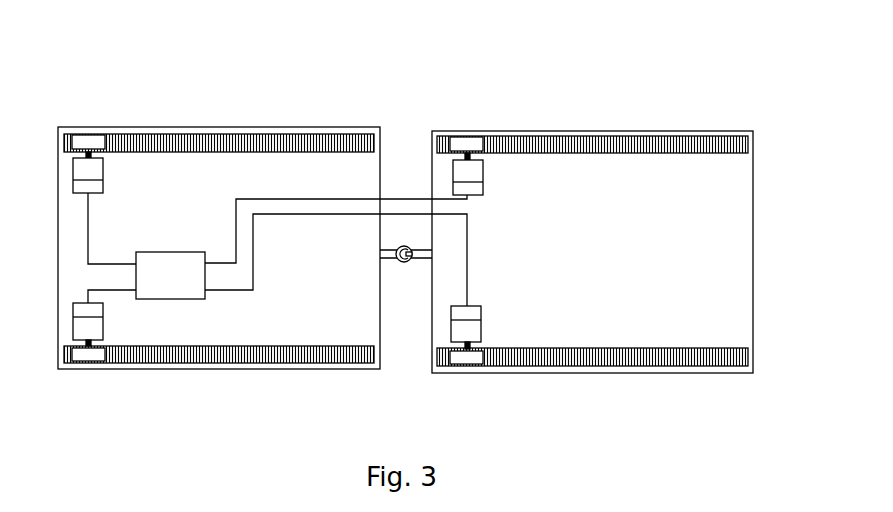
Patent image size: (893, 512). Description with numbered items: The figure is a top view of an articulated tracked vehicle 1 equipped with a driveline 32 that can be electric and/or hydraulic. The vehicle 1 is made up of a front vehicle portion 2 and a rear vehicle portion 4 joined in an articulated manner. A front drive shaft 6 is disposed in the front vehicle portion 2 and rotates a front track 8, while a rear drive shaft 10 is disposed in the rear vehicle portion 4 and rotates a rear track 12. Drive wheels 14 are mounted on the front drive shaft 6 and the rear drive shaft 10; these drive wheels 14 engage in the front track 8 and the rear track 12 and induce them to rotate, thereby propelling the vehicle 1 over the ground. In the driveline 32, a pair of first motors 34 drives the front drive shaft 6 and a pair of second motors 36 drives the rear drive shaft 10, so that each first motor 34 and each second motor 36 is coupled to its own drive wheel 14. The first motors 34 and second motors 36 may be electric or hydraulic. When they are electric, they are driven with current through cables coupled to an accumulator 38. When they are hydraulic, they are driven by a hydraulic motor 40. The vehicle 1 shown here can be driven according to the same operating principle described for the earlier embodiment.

The articulated tracked vehicle 1 is at (455, 78).
The front vehicle portion 2 is at (256, 124).
The rear vehicle portion 4 is at (632, 129).
The front drive shaft 6 is at (118, 148).
The front track 8 is at (212, 143).
The rear drive shaft 10 is at (470, 157).
The rear track 12 is at (712, 145).
The drive wheel 14 is at (88, 143).
The driveline 32 is at (306, 232).
The first motor 34 is at (98, 170).
The second motor 36 is at (483, 175).
The accumulator 38 is at (185, 252).
The hydraulic motor 40 is at (205, 300).